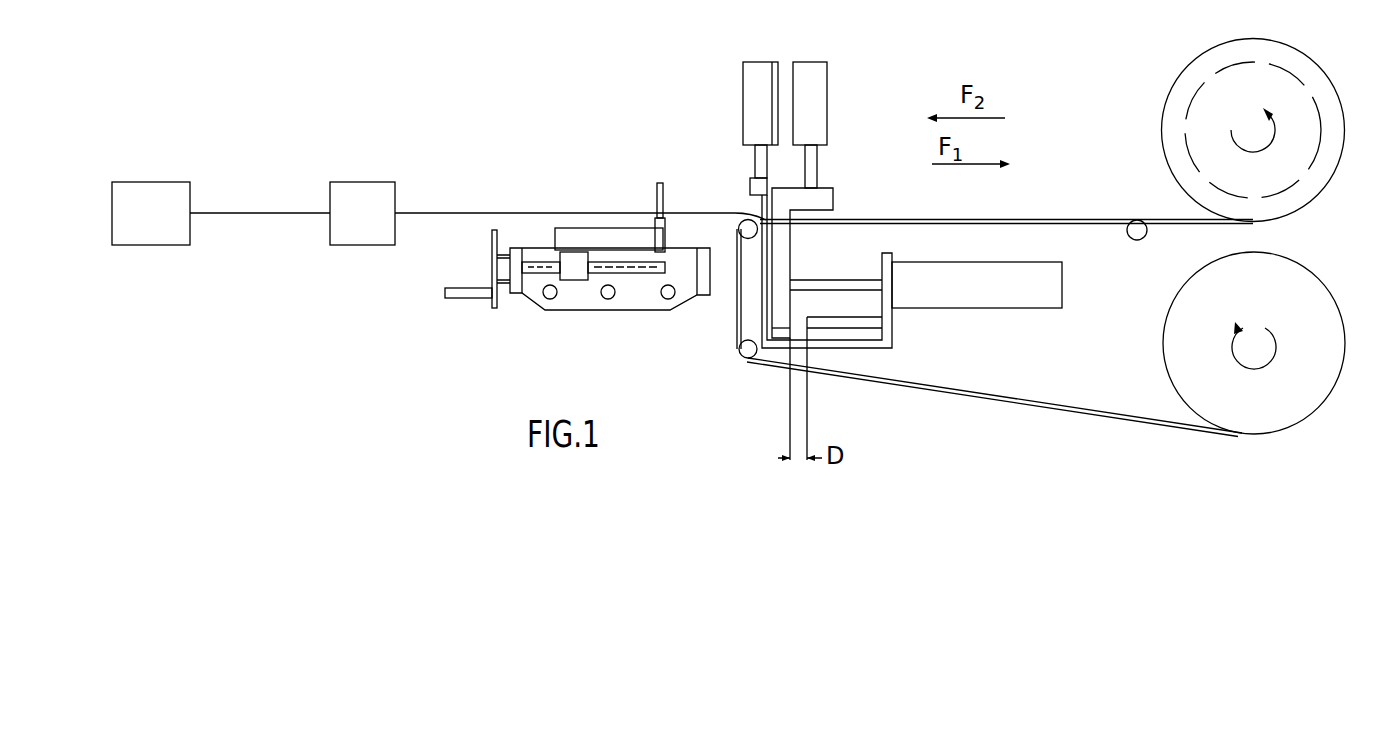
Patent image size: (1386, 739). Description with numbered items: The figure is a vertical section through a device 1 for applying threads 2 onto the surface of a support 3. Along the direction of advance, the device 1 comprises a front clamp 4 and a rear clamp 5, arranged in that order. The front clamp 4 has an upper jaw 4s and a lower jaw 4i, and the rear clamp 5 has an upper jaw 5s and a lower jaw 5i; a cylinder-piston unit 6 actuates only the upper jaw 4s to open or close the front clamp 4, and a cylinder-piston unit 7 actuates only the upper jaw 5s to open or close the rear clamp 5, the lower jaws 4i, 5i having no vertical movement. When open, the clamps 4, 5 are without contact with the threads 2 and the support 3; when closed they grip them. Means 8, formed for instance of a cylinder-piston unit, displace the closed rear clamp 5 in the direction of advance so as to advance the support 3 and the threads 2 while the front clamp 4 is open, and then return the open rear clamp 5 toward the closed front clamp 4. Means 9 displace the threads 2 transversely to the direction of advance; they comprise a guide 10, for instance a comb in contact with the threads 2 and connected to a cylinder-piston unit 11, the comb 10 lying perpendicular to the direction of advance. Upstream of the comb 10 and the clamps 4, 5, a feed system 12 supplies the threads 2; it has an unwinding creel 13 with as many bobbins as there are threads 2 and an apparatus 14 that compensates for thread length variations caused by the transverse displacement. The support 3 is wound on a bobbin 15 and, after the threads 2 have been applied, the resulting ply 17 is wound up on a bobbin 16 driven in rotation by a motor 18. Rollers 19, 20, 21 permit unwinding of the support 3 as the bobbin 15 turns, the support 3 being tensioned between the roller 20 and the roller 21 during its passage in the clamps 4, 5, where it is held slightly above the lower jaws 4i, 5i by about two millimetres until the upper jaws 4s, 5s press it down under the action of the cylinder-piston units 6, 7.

The device 1 is at (578, 78).
The threads 2 is at (566, 212).
The support 3 is at (970, 224).
The front clamp 4 is at (789, 246).
The upper jaw of front clamp 4s is at (750, 180).
The lower jaw of front clamp 4i is at (762, 287).
The rear clamp 5 is at (827, 302).
The upper jaw of rear clamp 5s is at (828, 188).
The lower jaw of rear clamp 5i is at (790, 236).
The cylinder-piston unit 6 is at (743, 116).
The cylinder-piston unit 7 is at (827, 116).
The displacement means 8 is at (1050, 262).
The transverse displacement means 9 is at (628, 312).
The guide 10 is at (657, 190).
The cylinder-piston unit 11 is at (545, 310).
The feed system 12 is at (265, 120).
The unwinding creel 13 is at (172, 246).
The length compensating apparatus 14 is at (370, 190).
The bobbin 15 is at (1284, 428).
The bobbin 16 is at (1274, 122).
The ply 17 is at (1074, 220).
The motor 18 is at (1322, 120).
The roller 19 is at (743, 358).
The roller 20 is at (738, 230).
The roller 21 is at (1133, 241).